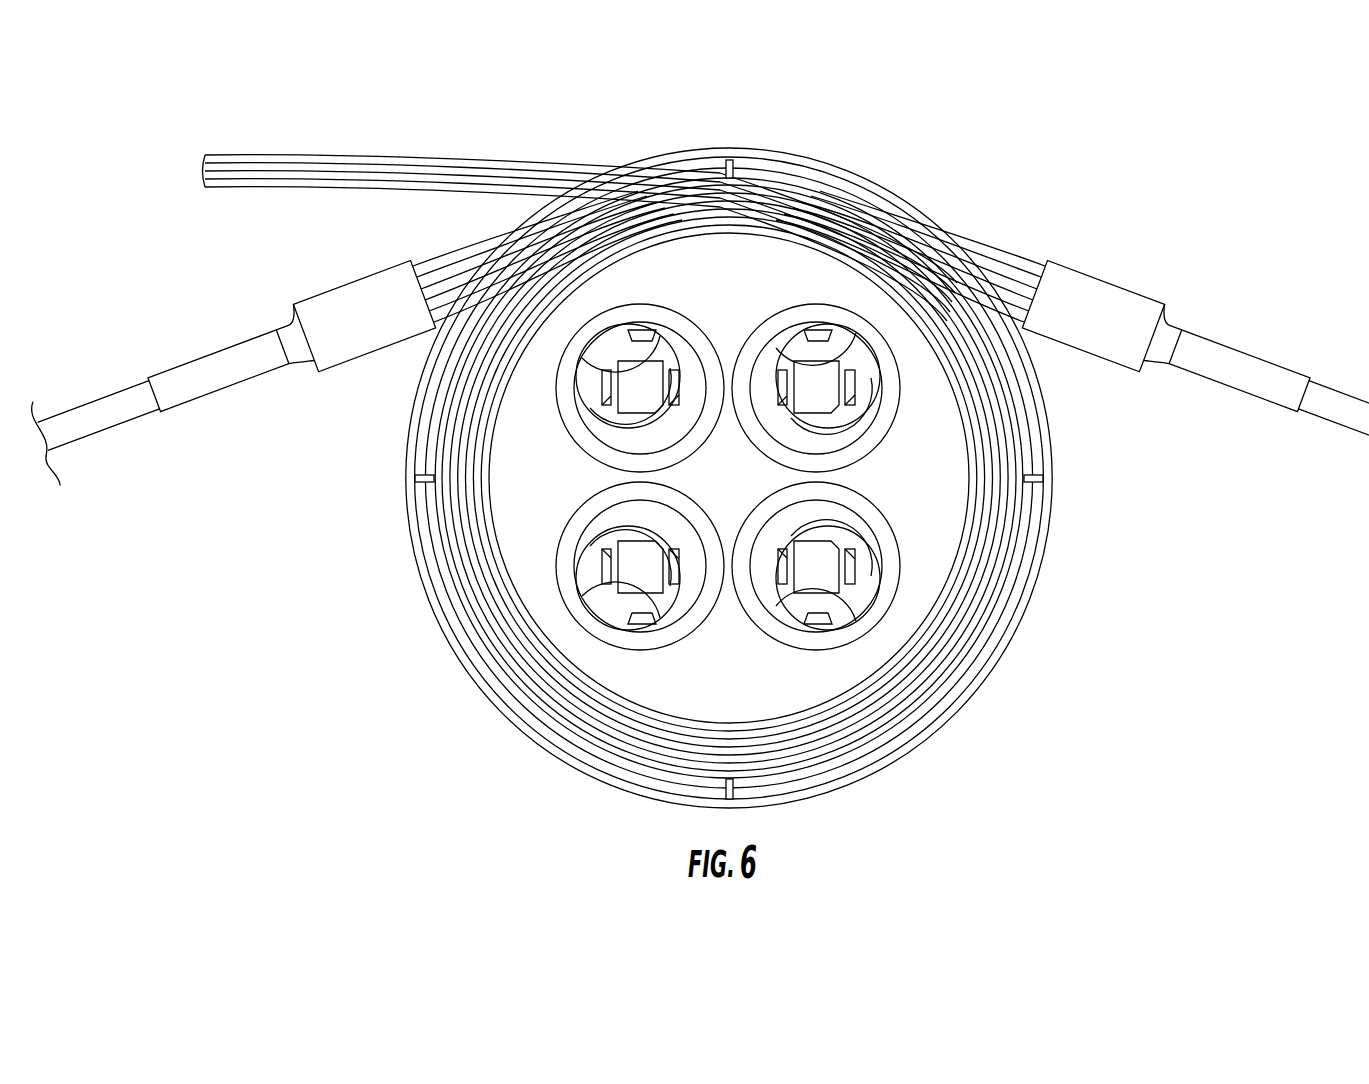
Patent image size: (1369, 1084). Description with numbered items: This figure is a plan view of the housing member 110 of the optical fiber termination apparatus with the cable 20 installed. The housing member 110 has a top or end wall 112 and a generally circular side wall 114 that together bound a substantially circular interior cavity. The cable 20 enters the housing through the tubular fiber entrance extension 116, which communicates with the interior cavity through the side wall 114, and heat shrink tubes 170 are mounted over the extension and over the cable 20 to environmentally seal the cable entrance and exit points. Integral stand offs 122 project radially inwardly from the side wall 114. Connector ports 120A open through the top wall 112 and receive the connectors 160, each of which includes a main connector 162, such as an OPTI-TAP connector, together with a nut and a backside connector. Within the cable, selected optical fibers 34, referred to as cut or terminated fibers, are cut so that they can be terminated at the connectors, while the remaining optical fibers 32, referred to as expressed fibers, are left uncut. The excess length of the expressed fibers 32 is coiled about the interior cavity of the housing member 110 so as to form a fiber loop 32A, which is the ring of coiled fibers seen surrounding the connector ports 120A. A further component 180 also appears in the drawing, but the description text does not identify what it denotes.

The cable 20 is at (98, 418).
The expressed fibers 32 is at (530, 234).
The fiber loop 32A is at (975, 619).
The cut fibers 34 is at (356, 154).
The housing member 110 is at (730, 478).
The top wall 112 is at (537, 488).
The side wall 114 is at (440, 628).
The tubular fiber entrance extension 116 is at (1017, 270).
The connector ports 120A is at (765, 622).
The integral stand offs 122 is at (415, 480).
The connectors 160 is at (862, 551).
The main connector 162 is at (840, 606).
The heat shrink tubes 170 is at (218, 368).
The connector 180 is at (437, 267).